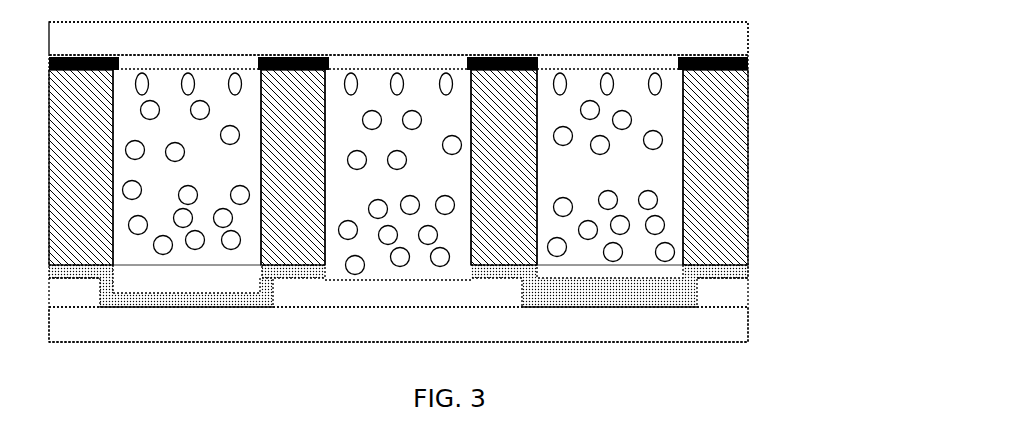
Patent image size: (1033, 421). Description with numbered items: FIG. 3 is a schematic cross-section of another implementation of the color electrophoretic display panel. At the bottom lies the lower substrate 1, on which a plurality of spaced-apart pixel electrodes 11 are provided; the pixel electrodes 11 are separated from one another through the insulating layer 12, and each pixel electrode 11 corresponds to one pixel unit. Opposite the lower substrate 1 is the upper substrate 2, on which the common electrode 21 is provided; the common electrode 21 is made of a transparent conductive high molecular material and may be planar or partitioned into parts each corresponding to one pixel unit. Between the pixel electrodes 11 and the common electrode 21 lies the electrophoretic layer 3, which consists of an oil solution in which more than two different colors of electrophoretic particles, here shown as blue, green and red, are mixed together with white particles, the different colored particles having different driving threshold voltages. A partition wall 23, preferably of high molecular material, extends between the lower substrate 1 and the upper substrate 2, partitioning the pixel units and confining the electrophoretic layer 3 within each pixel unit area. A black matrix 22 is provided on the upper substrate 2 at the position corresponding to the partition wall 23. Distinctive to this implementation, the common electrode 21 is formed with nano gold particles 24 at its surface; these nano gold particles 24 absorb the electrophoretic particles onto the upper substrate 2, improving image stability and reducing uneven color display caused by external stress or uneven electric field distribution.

The lower substrate 1 is at (717, 325).
The pixel electrodes 11 is at (487, 298).
The insulating layer 12 is at (727, 271).
The upper substrate 2 is at (700, 33).
The common electrode 21 is at (633, 65).
The black matrix 22 is at (747, 67).
The partition wall 23 is at (735, 192).
The nano gold particles 24 is at (655, 87).
The electrophoretic layer 3 is at (673, 223).